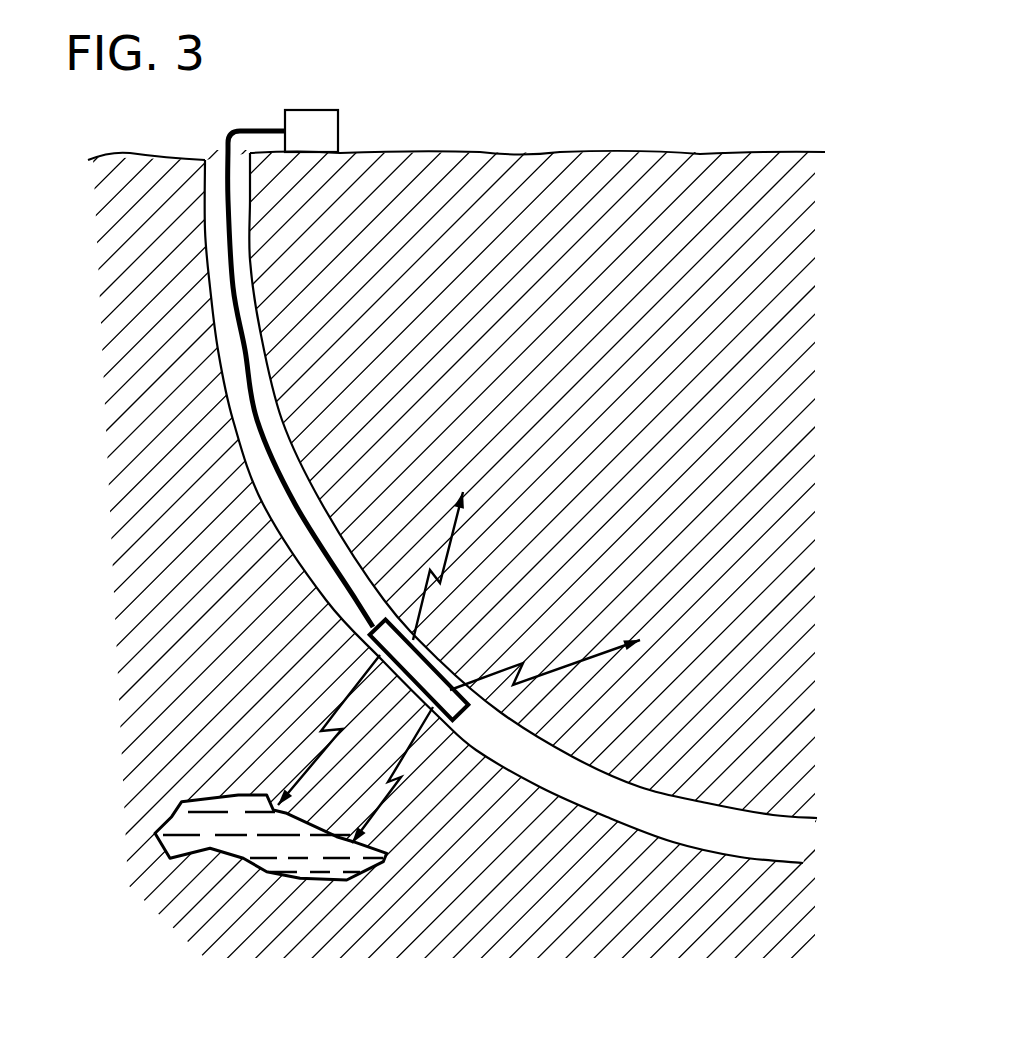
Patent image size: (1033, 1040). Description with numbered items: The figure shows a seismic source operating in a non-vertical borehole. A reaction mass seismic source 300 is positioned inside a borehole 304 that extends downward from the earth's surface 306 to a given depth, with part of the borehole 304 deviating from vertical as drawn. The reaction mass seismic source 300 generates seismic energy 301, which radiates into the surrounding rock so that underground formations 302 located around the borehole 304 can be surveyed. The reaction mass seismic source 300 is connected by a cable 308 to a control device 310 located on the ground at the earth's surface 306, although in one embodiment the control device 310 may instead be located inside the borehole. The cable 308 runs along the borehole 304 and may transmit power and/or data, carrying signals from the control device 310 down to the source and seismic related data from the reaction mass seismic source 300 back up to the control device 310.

The reaction mass seismic source 300 is at (432, 652).
The seismic energy 301 is at (337, 710).
The underground formations 302 is at (210, 848).
The borehole 304 is at (286, 446).
The earth's surface 306 is at (540, 152).
The cable 308 is at (240, 342).
The control device 310 is at (337, 108).